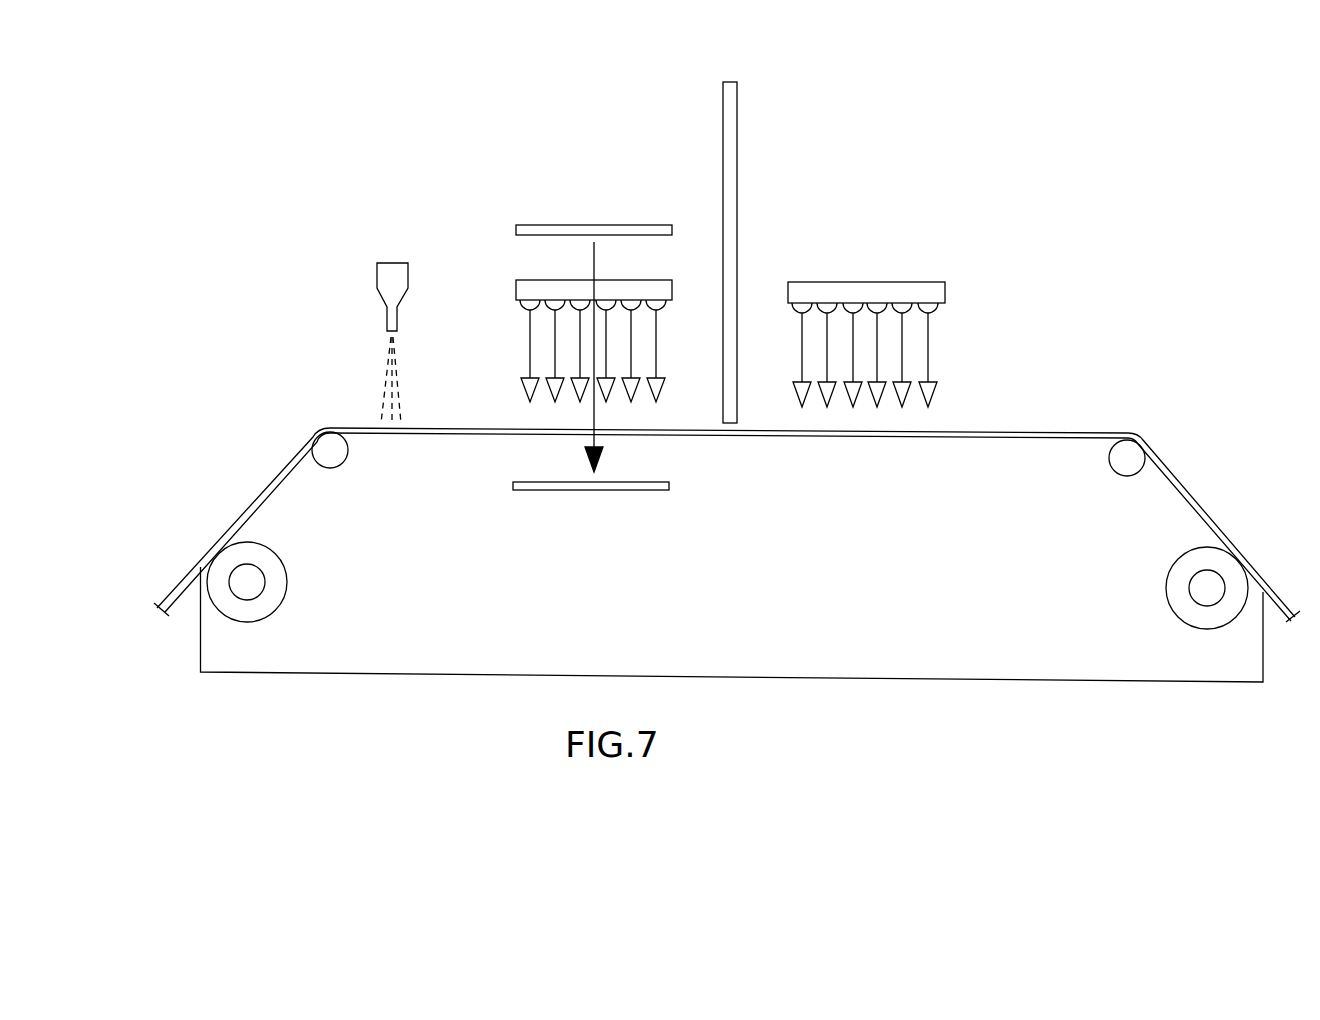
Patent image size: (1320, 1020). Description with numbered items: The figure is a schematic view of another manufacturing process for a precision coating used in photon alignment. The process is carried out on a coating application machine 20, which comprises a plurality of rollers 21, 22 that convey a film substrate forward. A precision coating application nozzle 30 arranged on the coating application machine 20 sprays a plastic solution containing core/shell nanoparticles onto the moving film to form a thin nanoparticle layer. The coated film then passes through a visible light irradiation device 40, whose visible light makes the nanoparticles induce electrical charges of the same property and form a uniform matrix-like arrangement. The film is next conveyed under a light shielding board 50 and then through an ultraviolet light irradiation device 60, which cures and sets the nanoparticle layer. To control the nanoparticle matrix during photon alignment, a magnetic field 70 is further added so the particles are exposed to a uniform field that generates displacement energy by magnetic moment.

The coating application machine 20 is at (726, 672).
The roller 21 is at (270, 625).
The roller 22 is at (338, 488).
The precision coating application nozzle 30 is at (352, 290).
The visible light irradiation device 40 is at (465, 265).
The light shielding board 50 is at (699, 218).
The ultraviolet light irradiation device 60 is at (895, 262).
The magnetic field 70 is at (526, 205).